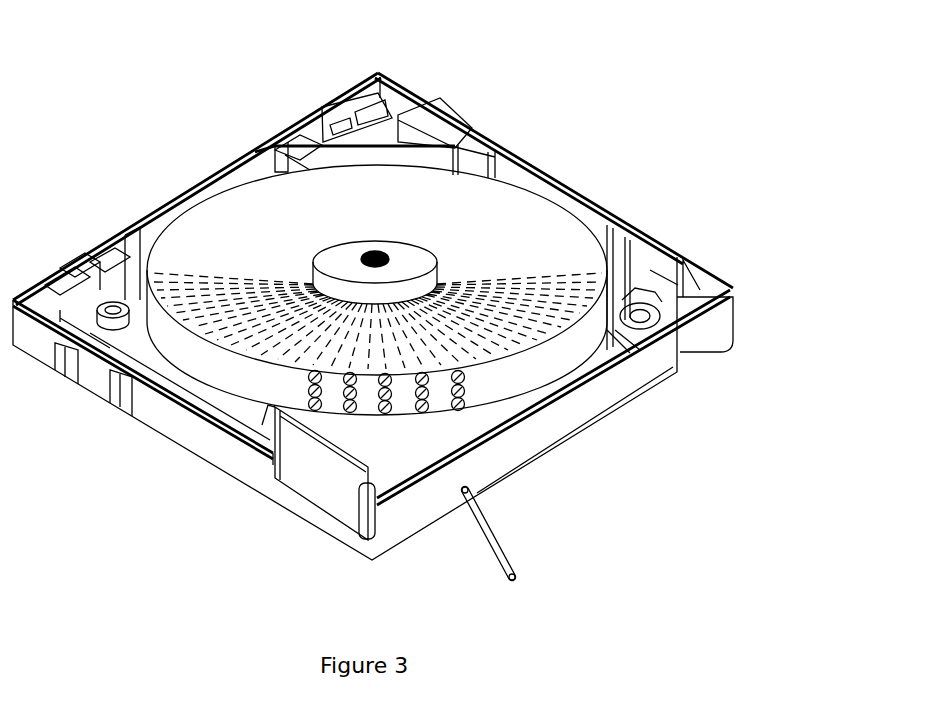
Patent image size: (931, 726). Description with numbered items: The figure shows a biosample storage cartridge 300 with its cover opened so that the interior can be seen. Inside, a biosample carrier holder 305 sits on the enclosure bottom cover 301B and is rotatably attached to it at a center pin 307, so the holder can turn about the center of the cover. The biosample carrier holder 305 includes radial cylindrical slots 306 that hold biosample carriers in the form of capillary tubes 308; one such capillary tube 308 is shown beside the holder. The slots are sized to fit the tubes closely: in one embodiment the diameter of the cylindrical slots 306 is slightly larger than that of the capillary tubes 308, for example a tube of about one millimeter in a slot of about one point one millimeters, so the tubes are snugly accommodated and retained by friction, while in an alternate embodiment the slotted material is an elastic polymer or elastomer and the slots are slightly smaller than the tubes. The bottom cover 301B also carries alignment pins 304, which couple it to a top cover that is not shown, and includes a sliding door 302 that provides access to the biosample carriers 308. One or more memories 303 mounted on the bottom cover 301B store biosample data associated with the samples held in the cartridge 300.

The biosample storage cartridge 300 is at (186, 46).
The enclosure bottom cover 301B is at (200, 441).
The sliding door 302 is at (330, 484).
The memory 303 is at (107, 273).
The alignment pin 304 is at (640, 315).
The biosample carrier holder 305 is at (513, 208).
The radial cylindrical slots 306 is at (460, 403).
The center pin 307 is at (373, 258).
The capillary tubes 308 is at (527, 553).